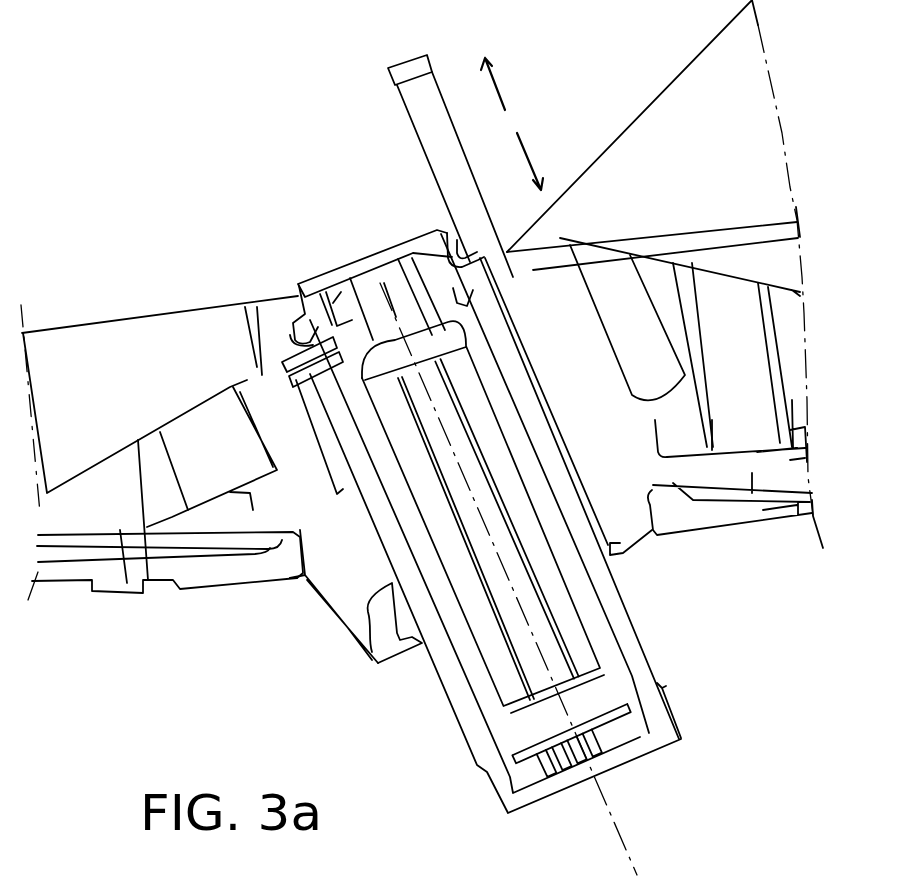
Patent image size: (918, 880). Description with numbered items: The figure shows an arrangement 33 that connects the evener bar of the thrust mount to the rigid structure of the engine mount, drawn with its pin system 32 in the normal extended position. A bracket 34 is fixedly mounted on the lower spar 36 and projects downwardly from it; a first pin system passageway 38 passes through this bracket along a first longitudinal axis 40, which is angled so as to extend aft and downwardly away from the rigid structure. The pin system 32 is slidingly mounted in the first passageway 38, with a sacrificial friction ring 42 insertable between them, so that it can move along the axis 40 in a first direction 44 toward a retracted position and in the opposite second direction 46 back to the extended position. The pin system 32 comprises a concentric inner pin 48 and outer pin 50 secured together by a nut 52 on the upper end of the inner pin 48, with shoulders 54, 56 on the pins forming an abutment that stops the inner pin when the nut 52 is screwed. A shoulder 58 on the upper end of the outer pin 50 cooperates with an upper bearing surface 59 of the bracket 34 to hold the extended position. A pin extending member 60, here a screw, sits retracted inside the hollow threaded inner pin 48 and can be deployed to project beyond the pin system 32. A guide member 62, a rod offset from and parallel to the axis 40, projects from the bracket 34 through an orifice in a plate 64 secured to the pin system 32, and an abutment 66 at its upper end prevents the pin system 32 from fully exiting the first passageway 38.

The pin system 32 is at (753, 610).
The arrangement 33 is at (310, 198).
The bracket 34 is at (312, 603).
The lower spar 36 is at (58, 572).
The first pin system passageway 38 is at (348, 498).
The first longitudinal axis 40 is at (363, 250).
The sacrificial friction ring 42 is at (368, 661).
The first direction 44 is at (500, 90).
The second direction 46 is at (533, 163).
The inner pin 48 is at (610, 698).
The outer pin 50 is at (660, 688).
The nut 52 is at (300, 280).
The shoulder 54 is at (326, 292).
The shoulder 56 is at (336, 385).
The shoulder 58 is at (289, 386).
The upper bearing surface 59 is at (287, 362).
The pin extending member 60 is at (557, 773).
The guide member 62 is at (451, 79).
The plate 64 is at (480, 263).
The abutment 66 is at (410, 65).